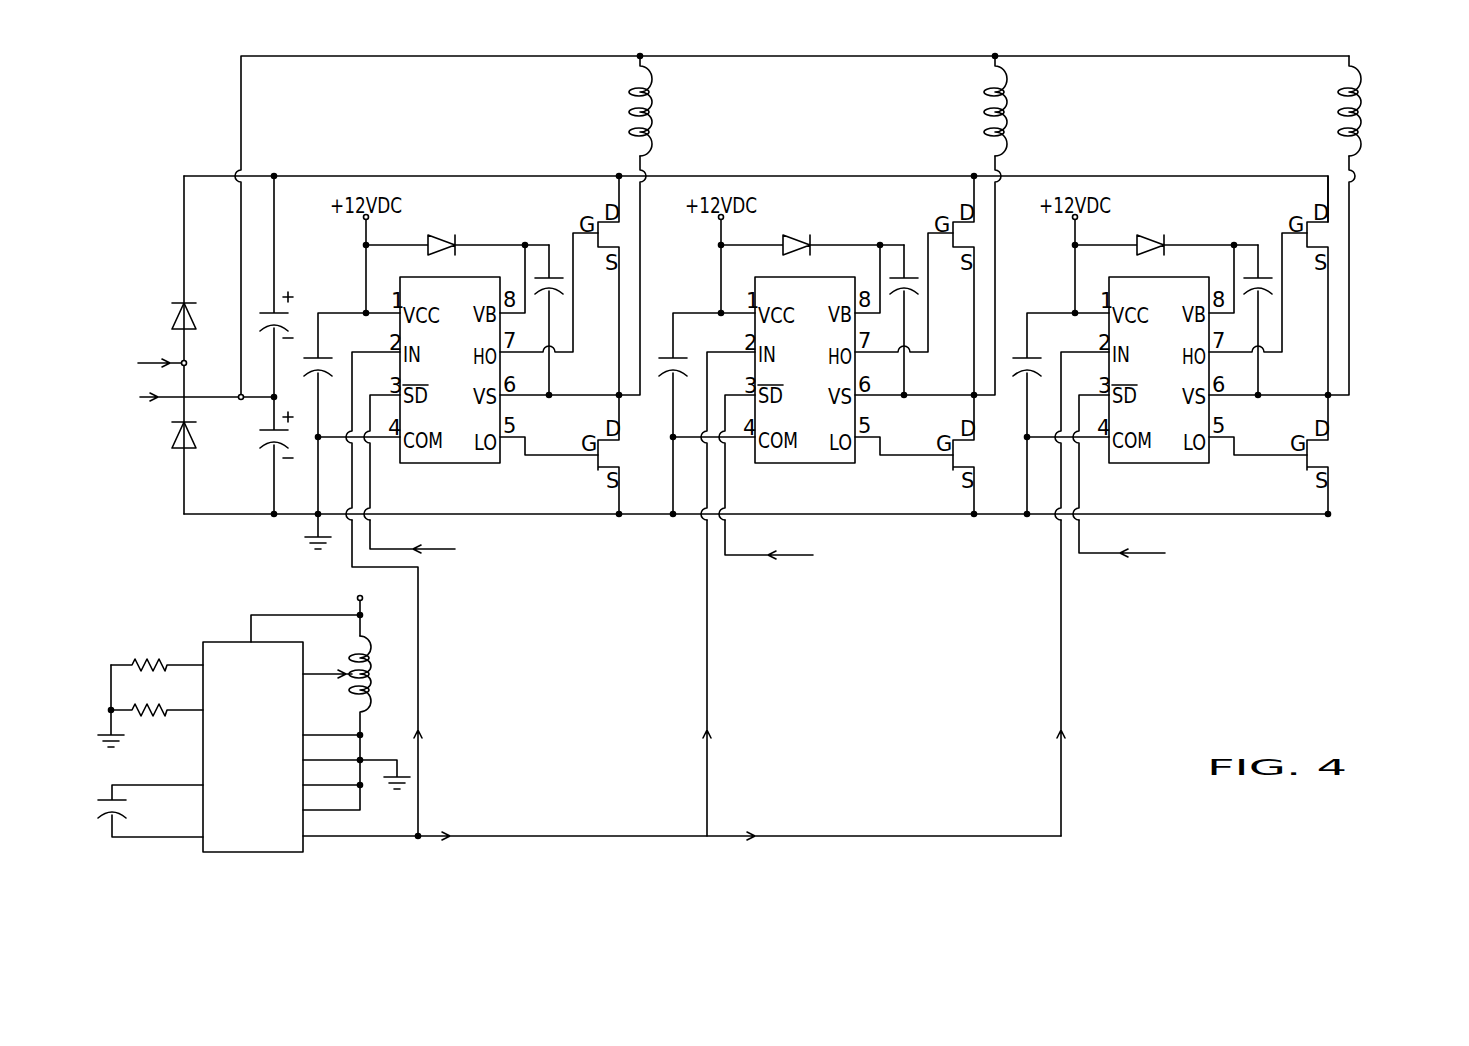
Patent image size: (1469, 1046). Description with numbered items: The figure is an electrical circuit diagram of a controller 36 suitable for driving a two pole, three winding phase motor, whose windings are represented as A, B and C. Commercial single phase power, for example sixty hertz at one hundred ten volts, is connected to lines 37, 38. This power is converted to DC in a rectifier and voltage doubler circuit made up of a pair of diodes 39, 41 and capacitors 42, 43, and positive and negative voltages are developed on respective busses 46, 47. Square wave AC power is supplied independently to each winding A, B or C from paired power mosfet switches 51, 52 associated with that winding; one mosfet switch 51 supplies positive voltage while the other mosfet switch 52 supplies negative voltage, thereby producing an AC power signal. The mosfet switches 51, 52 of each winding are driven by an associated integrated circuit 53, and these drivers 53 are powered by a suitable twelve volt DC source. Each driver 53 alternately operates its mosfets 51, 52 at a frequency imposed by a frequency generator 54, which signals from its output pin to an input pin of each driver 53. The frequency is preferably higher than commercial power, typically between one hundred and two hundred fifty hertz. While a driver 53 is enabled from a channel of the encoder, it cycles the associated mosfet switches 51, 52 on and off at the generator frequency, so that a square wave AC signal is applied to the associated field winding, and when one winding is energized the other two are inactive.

The controller 36 is at (874, 448).
The line 37 is at (170, 356).
The line 38 is at (156, 397).
The diode 39 is at (184, 300).
The diode 41 is at (180, 450).
The capacitor 42 is at (290, 318).
The capacitor 43 is at (263, 421).
The bus 46 is at (353, 176).
The bus 47 is at (190, 518).
The power mosfet switch 51 is at (598, 219).
The power mosfet switch 52 is at (597, 461).
The integrated circuit driver 53 is at (472, 465).
The frequency generator 54 is at (303, 845).